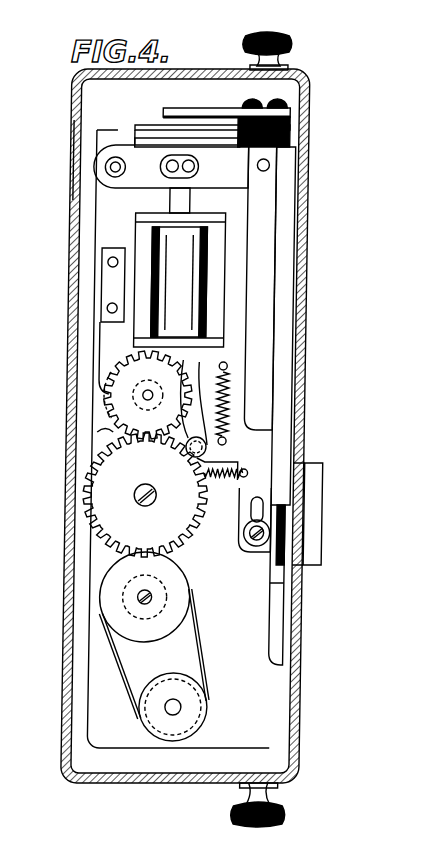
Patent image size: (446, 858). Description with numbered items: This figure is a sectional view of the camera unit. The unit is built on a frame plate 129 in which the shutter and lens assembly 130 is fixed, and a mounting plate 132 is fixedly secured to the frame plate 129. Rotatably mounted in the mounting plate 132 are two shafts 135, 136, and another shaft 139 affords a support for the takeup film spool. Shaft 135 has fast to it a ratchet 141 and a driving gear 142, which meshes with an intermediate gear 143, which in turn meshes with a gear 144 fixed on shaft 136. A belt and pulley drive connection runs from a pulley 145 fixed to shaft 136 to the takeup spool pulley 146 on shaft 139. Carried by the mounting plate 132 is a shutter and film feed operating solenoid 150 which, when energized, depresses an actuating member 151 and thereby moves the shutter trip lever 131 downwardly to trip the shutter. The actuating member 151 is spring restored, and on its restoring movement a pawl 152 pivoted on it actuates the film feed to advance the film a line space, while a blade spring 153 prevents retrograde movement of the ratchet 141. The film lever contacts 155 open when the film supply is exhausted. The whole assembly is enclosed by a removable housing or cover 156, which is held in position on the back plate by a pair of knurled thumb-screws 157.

The frame plate 129 is at (311, 320).
The shutter and lens assembly 130 is at (325, 470).
The shutter trip lever 131 is at (274, 548).
The mounting plate 132 is at (113, 218).
The shaft 135 is at (148, 388).
The shaft 136 is at (162, 598).
The shaft 139 is at (182, 705).
The ratchet 141 is at (115, 410).
The driving gear 142 is at (115, 430).
The intermediate gear 143 is at (126, 518).
The gear 144 is at (139, 558).
The pulley 145 is at (123, 611).
The takeup spool pulley 146 is at (212, 716).
The shutter and film feed operating solenoid 150 is at (180, 280).
The actuating member 151 is at (277, 212).
The pawl 152 is at (192, 373).
The blade spring 153 is at (109, 342).
The film lever contacts 155 is at (165, 114).
The removable housing or cover 156 is at (80, 150).
The knurled thumb-screws 157 is at (292, 46).